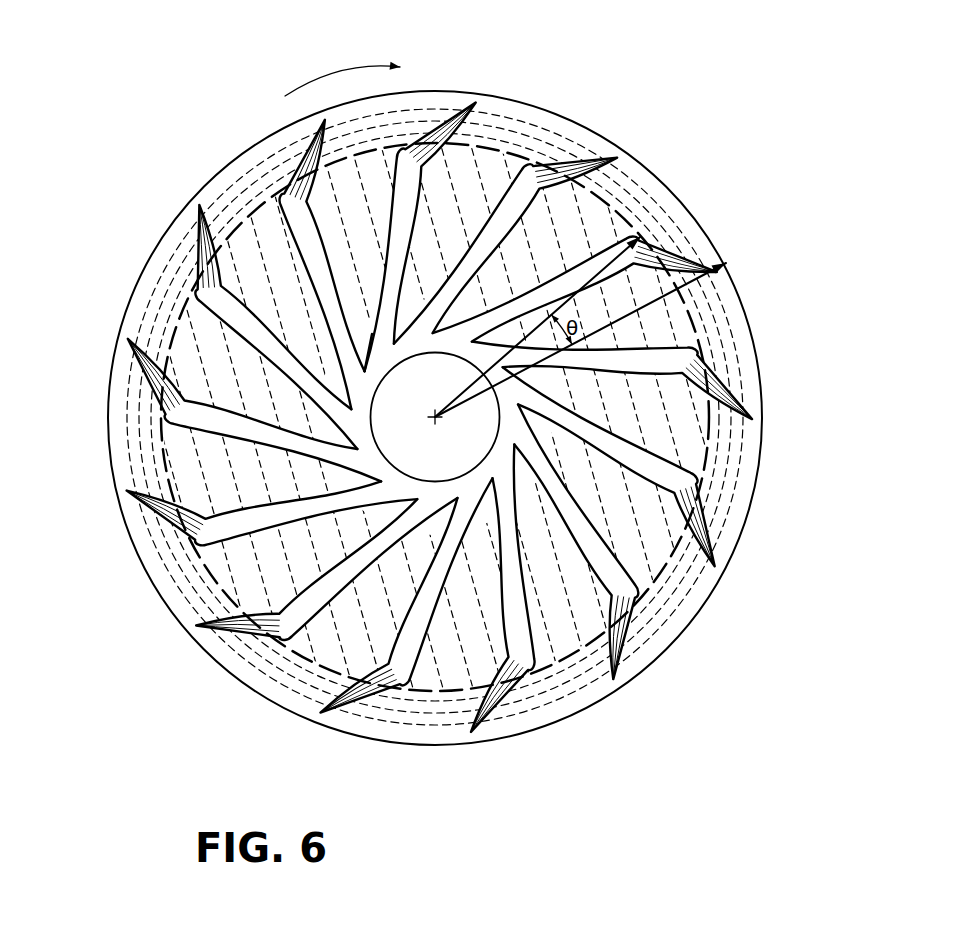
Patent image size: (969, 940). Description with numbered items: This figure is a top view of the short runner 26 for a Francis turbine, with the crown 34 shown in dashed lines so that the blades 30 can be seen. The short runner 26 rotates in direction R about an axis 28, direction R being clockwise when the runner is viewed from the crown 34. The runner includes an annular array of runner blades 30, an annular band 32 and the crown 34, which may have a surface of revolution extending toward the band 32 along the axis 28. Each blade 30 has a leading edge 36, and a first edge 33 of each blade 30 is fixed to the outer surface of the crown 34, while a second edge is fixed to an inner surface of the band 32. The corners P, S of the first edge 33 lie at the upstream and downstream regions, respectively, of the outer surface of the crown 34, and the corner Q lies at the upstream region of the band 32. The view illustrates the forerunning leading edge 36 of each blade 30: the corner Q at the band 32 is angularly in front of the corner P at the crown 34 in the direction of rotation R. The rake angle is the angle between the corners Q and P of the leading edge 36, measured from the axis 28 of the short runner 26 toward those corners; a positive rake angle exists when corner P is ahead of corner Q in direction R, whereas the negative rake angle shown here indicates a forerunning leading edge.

The short runner 26 is at (788, 313).
The axis 28 is at (434, 418).
The runner blades 30 is at (162, 302).
The annular band 32 is at (762, 384).
The first edge 33 is at (498, 236).
The crown 34 is at (383, 352).
The leading edge 36 is at (428, 148).
The corner P is at (642, 236).
The corner Q is at (727, 263).
The direction of rotation R is at (325, 89).
The corner S is at (216, 580).